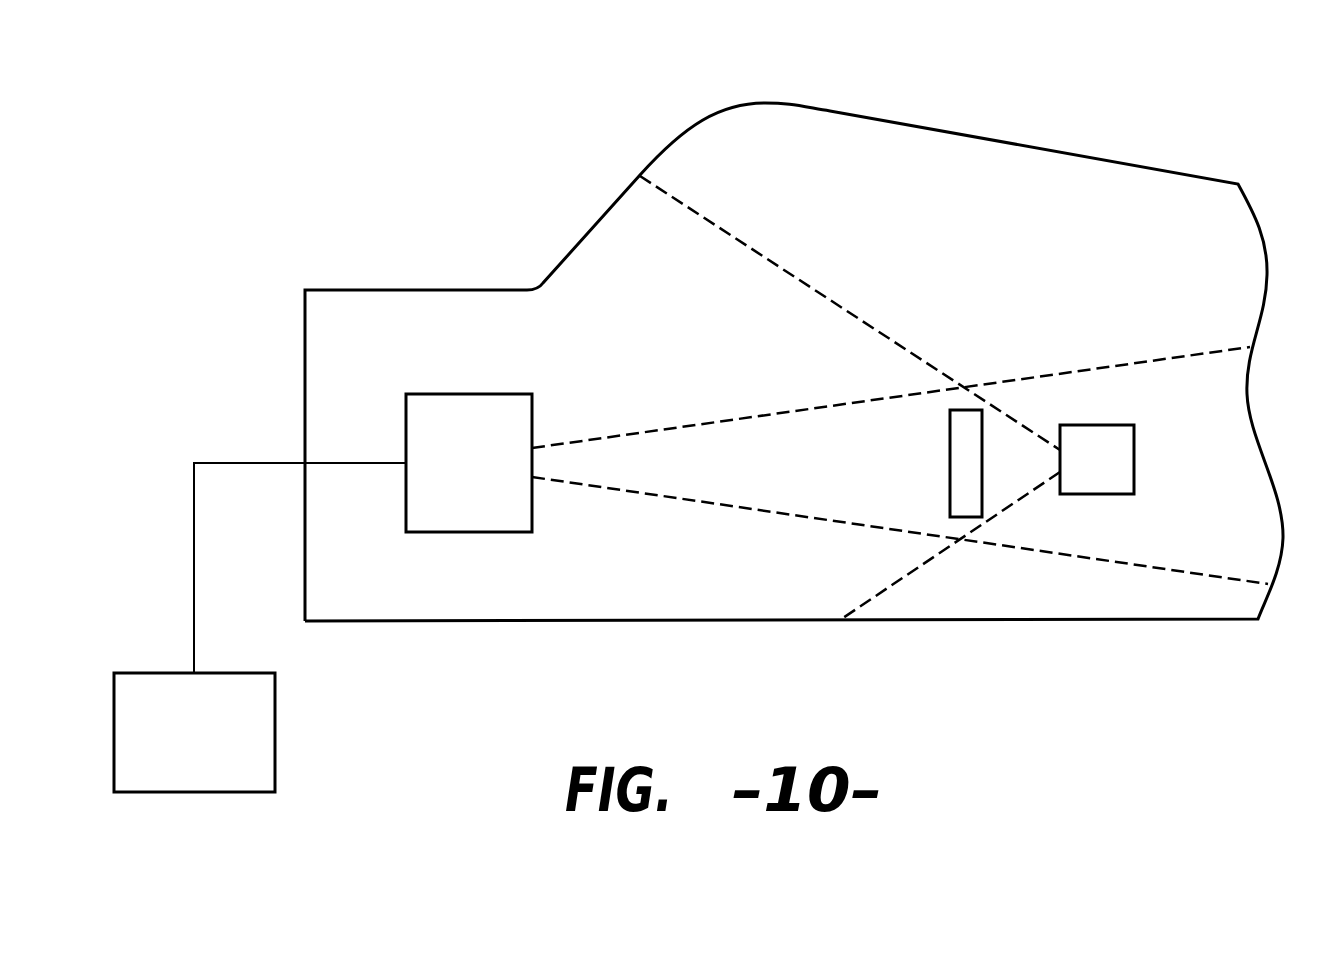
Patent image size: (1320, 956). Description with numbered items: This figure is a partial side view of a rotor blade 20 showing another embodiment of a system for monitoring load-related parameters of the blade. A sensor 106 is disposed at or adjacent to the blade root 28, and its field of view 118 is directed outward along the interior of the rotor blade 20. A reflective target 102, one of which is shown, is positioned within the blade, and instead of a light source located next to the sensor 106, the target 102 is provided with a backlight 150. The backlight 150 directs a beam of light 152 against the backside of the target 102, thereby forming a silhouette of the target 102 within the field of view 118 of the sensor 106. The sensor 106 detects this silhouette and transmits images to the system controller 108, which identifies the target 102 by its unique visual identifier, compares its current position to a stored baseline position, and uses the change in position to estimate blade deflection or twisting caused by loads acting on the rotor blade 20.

The rotor blade 20 is at (498, 160).
The blade root 28 is at (371, 290).
The reflective target 102 is at (950, 438).
The sensor 106 is at (495, 476).
The system controller 108 is at (220, 745).
The field of view 118 is at (712, 504).
The backlight 150 is at (1134, 458).
The beam of light 152 is at (755, 251).